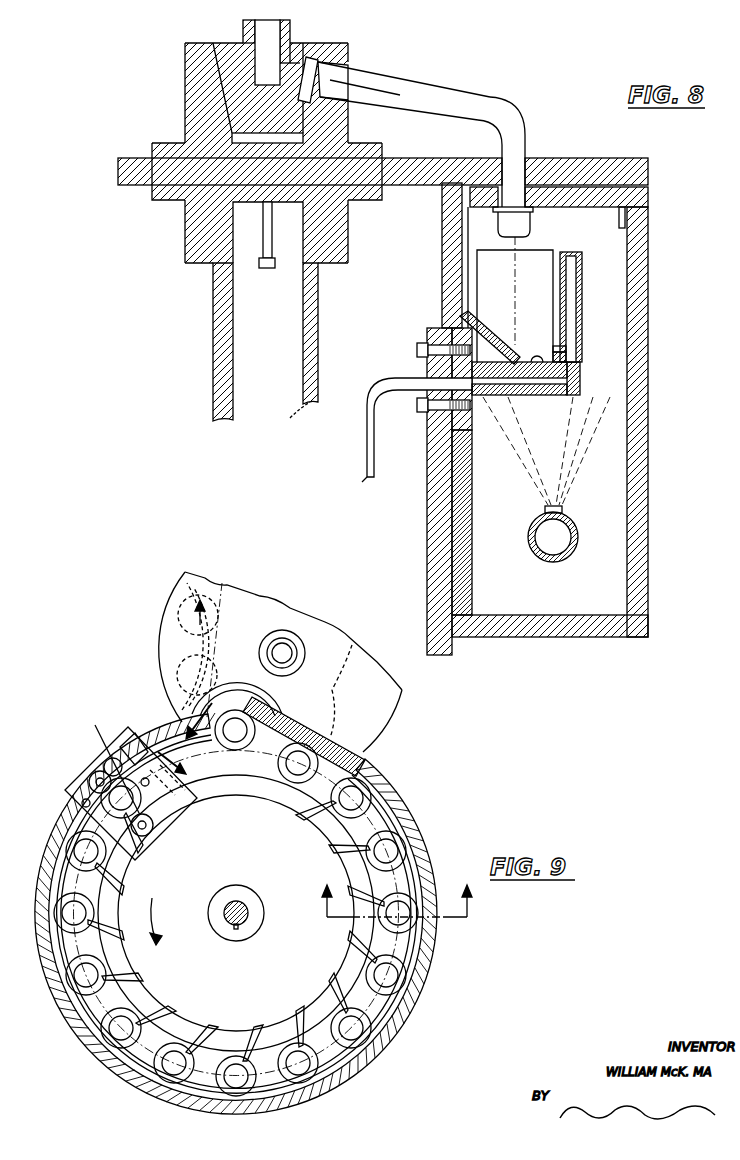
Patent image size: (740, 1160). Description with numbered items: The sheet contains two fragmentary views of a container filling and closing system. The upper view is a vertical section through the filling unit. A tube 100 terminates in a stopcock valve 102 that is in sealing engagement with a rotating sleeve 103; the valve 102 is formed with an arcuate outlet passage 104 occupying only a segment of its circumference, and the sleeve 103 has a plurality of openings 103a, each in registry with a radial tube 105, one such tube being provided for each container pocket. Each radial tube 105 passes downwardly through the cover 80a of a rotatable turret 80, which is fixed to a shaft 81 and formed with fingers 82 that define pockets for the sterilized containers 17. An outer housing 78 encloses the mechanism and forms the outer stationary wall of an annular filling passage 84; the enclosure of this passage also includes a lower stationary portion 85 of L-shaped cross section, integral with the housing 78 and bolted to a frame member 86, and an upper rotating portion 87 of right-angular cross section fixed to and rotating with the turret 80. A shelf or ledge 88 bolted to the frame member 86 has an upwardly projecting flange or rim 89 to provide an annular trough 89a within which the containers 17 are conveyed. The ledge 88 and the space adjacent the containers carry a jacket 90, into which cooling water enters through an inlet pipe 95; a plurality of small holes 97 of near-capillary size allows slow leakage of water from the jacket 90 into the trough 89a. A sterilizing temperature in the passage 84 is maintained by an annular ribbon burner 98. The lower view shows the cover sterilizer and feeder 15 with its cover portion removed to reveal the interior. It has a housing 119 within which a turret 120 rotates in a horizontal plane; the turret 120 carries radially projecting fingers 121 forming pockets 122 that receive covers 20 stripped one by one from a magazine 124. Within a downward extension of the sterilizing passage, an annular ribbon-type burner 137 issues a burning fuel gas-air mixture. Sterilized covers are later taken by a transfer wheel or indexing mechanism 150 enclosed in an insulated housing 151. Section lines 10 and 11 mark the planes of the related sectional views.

In FIG. 8, the tube 100 is at (246, 42).
In FIG. 8, the stopcock valve 102 is at (308, 48).
In FIG. 8, the arcuate outlet passage 104 is at (322, 58).
In FIG. 8, the rotating sleeve 103 is at (345, 78).
In FIG. 8, the openings 103a is at (380, 84).
In FIG. 8, the radial tube 105 is at (498, 100).
In FIG. 8, the rotatable turret 80 is at (604, 160).
In FIG. 8, the cover 80a is at (612, 162).
In FIG. 8, the outer housing 78 is at (652, 257).
In FIG. 8, the annular filling passage 84 is at (594, 231).
In FIG. 8, the upper rotating portion 87 is at (445, 258).
In FIG. 8, the container 17 is at (506, 285).
In FIG. 8, the jacket 90 is at (582, 297).
In FIG. 8, the fingers 82 is at (480, 333).
In FIG. 8, the small holes 97 is at (568, 349).
In FIG. 8, the flange or rim 89 is at (568, 356).
In FIG. 8, the shelf or ledge 88 is at (565, 372).
In FIG. 8, the annular trough 89a is at (537, 366).
In FIG. 8, the inlet pipe 95 is at (362, 480).
In FIG. 8, the frame member 86 is at (432, 542).
In FIG. 8, the annular ribbon burner 98 is at (540, 556).
In FIG. 8, the lower stationary portion 85 is at (543, 637).
In FIG. 8, the shaft 81 is at (263, 405).
In FIG. 9, the cover sterilizer and feeder 15 is at (400, 783).
In FIG. 9, the housing 119 is at (420, 836).
In FIG. 9, the annular ribbon-type burner 137 is at (272, 1082).
In FIG. 9, the covers 20 is at (362, 790).
In FIG. 9, the turret 120 is at (294, 977).
In FIG. 9, the radially projecting fingers 121 is at (230, 1040).
In FIG. 9, the pockets 122 is at (185, 1032).
In FIG. 9, the section line 10 is at (398, 894).
In FIG. 9, the transfer wheel or indexing mechanism 150 is at (365, 690).
In FIG. 9, the insulated housing 151 is at (380, 725).
In FIG. 9, the magazine 124 is at (99, 757).
In FIG. 9, the section line 11 is at (185, 743).